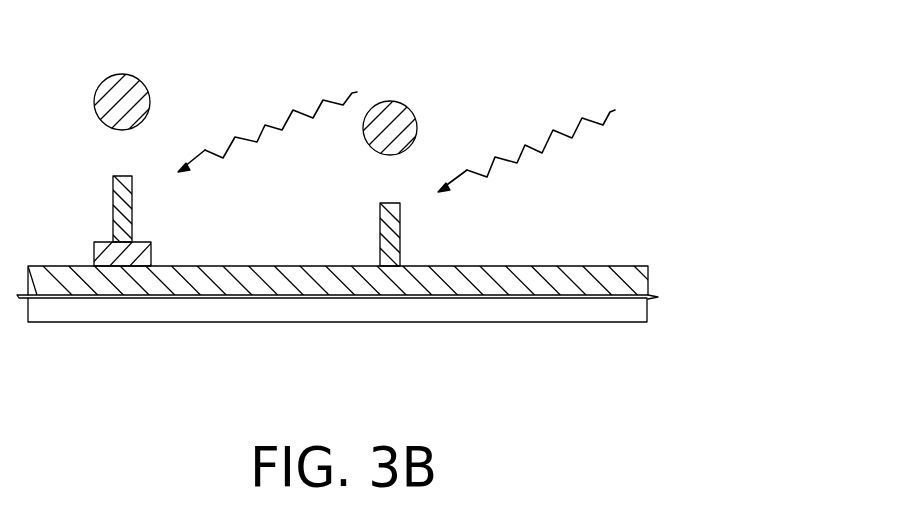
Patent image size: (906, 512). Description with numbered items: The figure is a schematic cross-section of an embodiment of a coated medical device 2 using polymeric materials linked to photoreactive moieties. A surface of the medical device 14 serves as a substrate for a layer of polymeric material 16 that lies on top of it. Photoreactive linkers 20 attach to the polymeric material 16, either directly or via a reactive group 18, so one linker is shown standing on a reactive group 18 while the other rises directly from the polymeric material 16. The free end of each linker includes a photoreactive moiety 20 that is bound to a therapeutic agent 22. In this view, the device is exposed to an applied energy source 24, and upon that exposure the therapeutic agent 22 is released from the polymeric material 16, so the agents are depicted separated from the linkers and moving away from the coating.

The sensor device 2 is at (662, 176).
The medical device 14 is at (633, 313).
The polymeric material 16 is at (633, 288).
The reactive group 18 is at (140, 258).
The photoreactive linker 20 is at (128, 211).
The therapeutic agent 22 is at (137, 103).
The applied energy source 24 is at (282, 130).